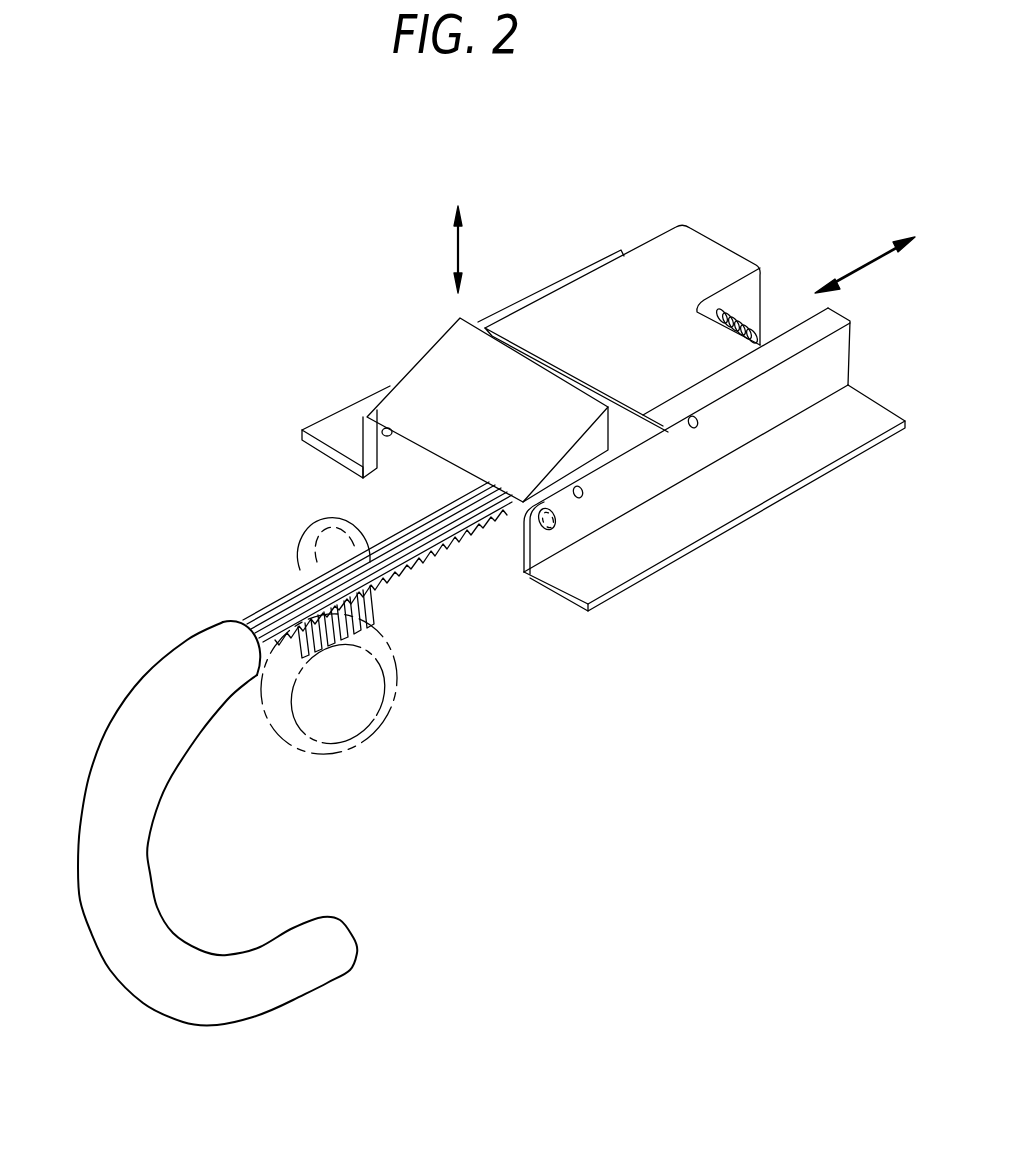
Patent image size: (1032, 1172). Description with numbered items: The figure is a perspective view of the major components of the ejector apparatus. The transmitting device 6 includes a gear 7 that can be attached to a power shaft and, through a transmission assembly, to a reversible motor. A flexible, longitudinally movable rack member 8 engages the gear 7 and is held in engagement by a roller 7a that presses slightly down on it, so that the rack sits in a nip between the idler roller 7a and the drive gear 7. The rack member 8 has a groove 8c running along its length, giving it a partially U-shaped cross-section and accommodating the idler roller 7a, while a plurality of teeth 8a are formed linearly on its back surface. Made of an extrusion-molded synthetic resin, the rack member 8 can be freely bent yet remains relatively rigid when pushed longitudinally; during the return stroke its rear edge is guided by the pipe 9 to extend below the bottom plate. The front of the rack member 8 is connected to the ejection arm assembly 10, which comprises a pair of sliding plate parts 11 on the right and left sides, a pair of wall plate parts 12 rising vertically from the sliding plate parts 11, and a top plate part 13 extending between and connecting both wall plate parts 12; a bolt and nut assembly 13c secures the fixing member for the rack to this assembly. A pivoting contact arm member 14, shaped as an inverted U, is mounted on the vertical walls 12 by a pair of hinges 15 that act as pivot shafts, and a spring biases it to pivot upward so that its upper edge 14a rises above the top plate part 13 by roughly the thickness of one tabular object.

The transmitting device 6 is at (193, 368).
The gear 7 is at (367, 643).
The roller 7a is at (312, 533).
The movable rack member 8 is at (290, 590).
The teeth 8a is at (467, 543).
The groove 8c is at (270, 613).
The pipe 9 is at (318, 966).
The ejection arm assembly 10 is at (776, 268).
The sliding plate parts 11 is at (777, 477).
The wall plate parts 12 is at (836, 357).
The top plate part 13 is at (670, 258).
The bolt and nut assembly 13c is at (740, 316).
The pivoting contact arm member 14 is at (450, 367).
The upper edge 14a is at (538, 348).
The hinges 15 is at (557, 523).